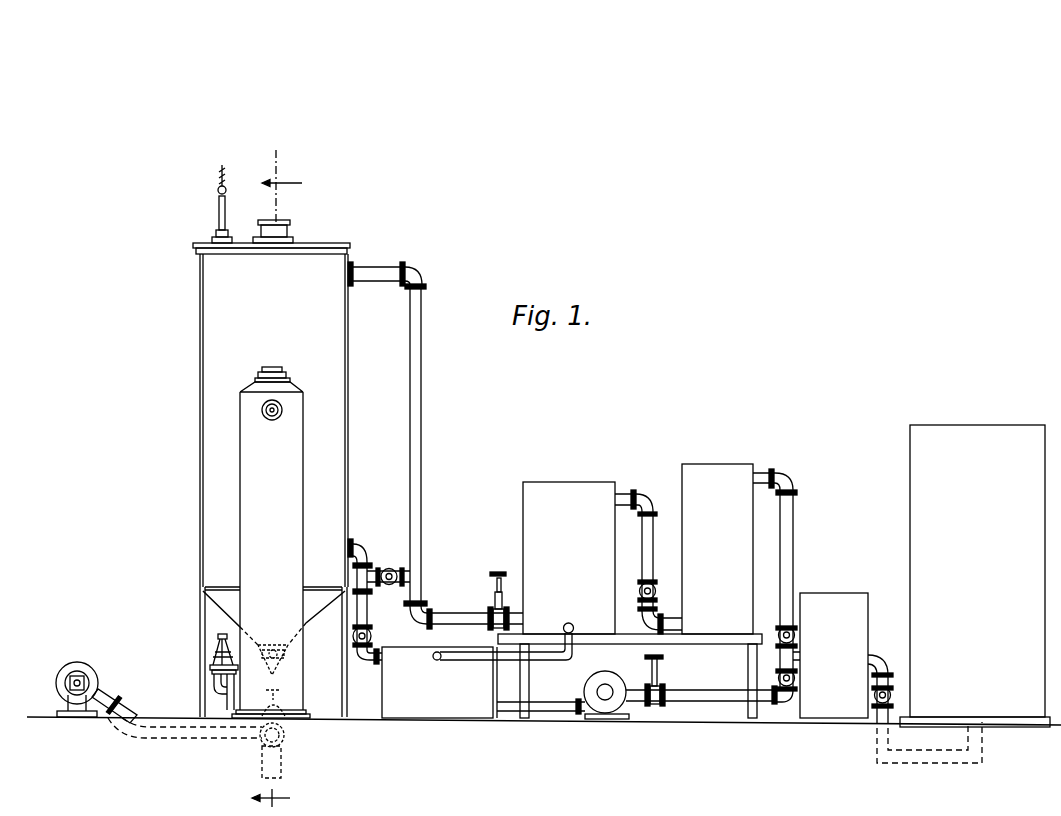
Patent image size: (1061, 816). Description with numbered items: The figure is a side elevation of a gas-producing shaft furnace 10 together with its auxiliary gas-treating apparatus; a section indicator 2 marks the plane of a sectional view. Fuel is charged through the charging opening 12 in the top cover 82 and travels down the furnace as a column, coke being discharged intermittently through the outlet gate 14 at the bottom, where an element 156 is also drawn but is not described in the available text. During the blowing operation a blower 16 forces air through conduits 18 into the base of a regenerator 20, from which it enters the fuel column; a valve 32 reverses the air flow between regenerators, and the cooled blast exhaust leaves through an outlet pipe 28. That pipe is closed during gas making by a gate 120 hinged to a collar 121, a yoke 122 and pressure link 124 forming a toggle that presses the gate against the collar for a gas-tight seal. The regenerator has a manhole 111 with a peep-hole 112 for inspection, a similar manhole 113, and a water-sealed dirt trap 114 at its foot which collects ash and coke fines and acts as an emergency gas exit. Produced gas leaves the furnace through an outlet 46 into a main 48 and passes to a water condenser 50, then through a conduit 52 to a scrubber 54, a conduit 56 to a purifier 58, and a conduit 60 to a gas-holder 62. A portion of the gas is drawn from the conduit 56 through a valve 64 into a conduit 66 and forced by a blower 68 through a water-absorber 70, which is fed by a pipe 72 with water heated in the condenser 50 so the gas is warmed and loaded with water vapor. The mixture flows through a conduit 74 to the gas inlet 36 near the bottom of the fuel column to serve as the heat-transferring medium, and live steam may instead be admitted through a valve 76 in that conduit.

The section line of FIG. 2 is at (284, 479).
The shaft furnace 10 is at (203, 441).
The charging opening 12 is at (270, 220).
The outlet gate 14 is at (284, 676).
The blower 16 is at (82, 664).
The conduits 18 is at (168, 745).
The regenerator 20 is at (240, 492).
The outlet pipe 28 is at (214, 690).
The valve 32 is at (285, 728).
The inlet 36 is at (352, 546).
The outlet 46 is at (358, 268).
The main 48 is at (421, 372).
The water condenser 50 is at (566, 482).
The conduit 52 is at (653, 534).
The scrubber 54 is at (726, 464).
The conduit 56 is at (794, 535).
The purifier 58 is at (846, 593).
The conduit 60 is at (874, 656).
The gas-holder 62 is at (910, 438).
The valve 64 is at (790, 700).
The conduit 66 is at (701, 690).
The blower 68 is at (607, 675).
The water-absorber 70 is at (382, 698).
The pipe 72 is at (550, 662).
The conduit 74 is at (369, 634).
The valve 76 is at (389, 569).
The top cover 82 is at (320, 245).
The manhole 111 is at (291, 378).
The peep-hole 112 is at (295, 364).
The manhole 113 is at (272, 420).
The dirt trap 114 is at (283, 768).
The gate 120 is at (210, 666).
The collar 121 is at (212, 672).
The yoke 122 is at (215, 654).
The pressure link 124 is at (218, 640).
The feed nozzle 156 is at (288, 653).